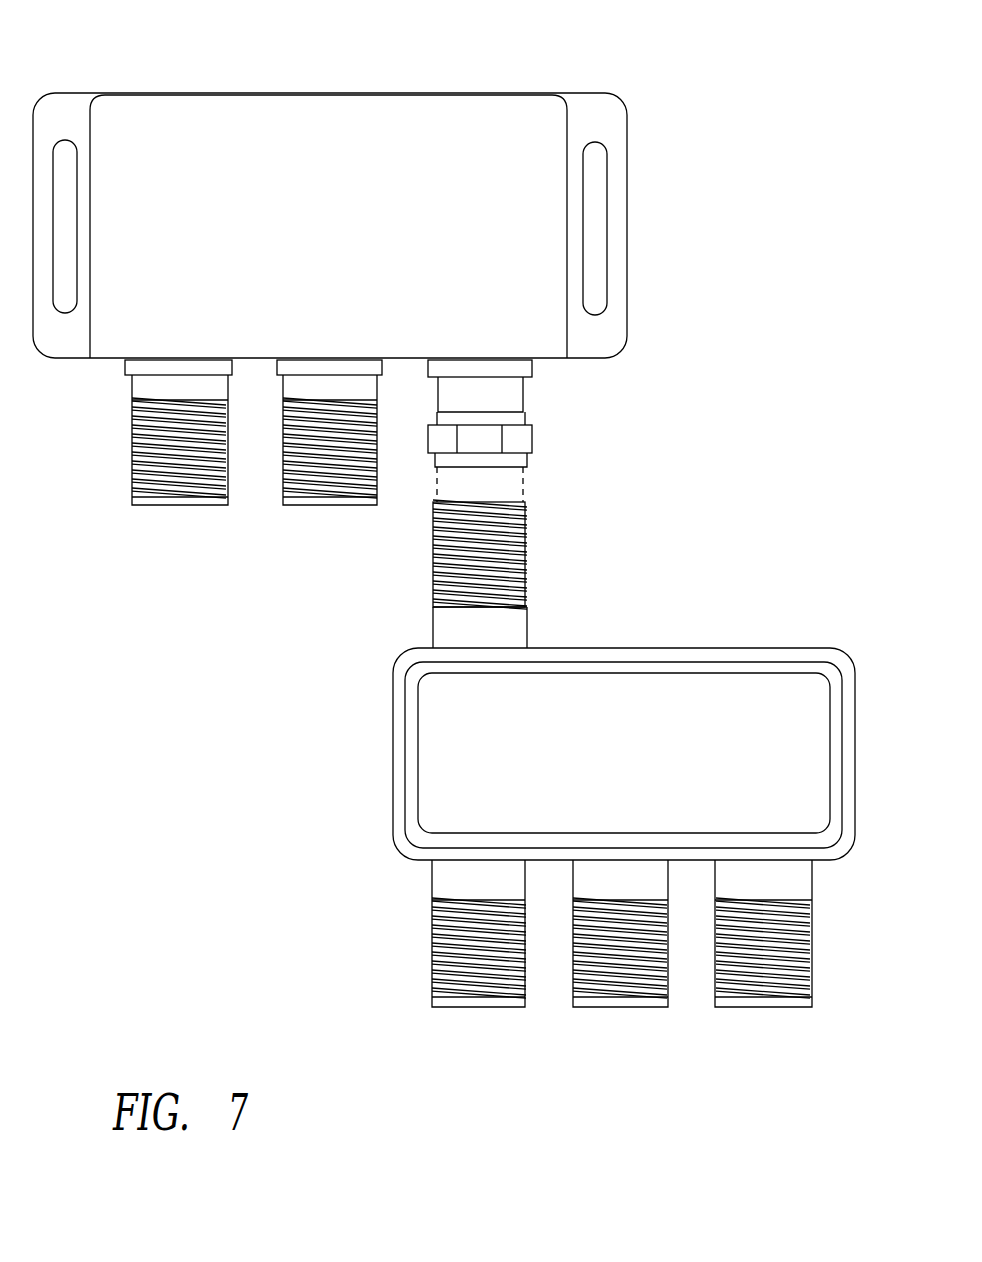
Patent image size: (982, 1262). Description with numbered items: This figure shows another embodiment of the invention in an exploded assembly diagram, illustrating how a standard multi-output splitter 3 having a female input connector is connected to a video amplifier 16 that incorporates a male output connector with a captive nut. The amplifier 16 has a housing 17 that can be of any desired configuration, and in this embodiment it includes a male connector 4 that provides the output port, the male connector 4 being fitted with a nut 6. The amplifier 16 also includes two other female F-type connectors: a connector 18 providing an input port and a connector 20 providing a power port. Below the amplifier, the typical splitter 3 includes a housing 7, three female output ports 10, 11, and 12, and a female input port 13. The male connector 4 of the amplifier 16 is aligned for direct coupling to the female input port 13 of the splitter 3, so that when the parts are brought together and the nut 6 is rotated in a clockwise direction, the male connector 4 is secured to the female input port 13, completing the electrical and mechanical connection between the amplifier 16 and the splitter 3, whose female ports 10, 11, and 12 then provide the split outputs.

The splitter 3 is at (615, 787).
The male connector 4 is at (525, 397).
The nut 6 is at (520, 441).
The housing 7 is at (700, 646).
The female port 10 is at (432, 878).
The female port 11 is at (617, 1007).
The female port 12 is at (812, 889).
The female input port 13 is at (527, 625).
The amplifier 16 is at (424, 85).
The housing 17 is at (627, 157).
The connector 18 is at (130, 386).
The connector 20 is at (377, 387).